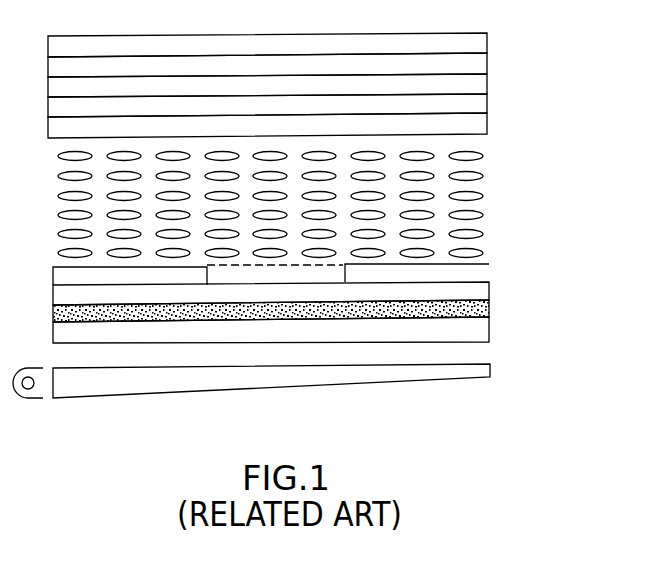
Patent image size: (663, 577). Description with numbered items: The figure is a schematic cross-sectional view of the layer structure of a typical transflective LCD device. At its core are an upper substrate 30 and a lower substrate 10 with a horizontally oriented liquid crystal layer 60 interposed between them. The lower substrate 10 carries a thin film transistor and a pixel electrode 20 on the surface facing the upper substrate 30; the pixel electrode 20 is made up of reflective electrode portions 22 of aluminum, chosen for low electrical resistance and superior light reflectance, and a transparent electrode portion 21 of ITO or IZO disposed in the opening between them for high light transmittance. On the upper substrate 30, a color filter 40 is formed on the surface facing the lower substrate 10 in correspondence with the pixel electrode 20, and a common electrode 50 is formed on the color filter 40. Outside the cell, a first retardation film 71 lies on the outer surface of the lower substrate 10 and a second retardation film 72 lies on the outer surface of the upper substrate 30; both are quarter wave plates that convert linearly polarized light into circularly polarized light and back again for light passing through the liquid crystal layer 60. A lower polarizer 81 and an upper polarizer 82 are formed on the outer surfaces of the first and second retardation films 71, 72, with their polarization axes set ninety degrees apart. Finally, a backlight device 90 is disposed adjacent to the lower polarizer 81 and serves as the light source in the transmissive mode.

The upper polarizer 82 is at (487, 42).
The second retardation film 72 is at (487, 63).
The upper substrate 30 is at (487, 84).
The color filter 40 is at (487, 103).
The common electrode 50 is at (487, 123).
The liquid crystal layer 60 is at (478, 184).
The pixel electrode 20 is at (318, 259).
The transparent electrode portion 21 is at (332, 273).
The reflective electrode portions 22 is at (489, 269).
The lower substrate 10 is at (489, 290).
The first retardation film 71 is at (489, 311).
The lower polarizer 81 is at (489, 331).
The backlight device 90 is at (490, 371).